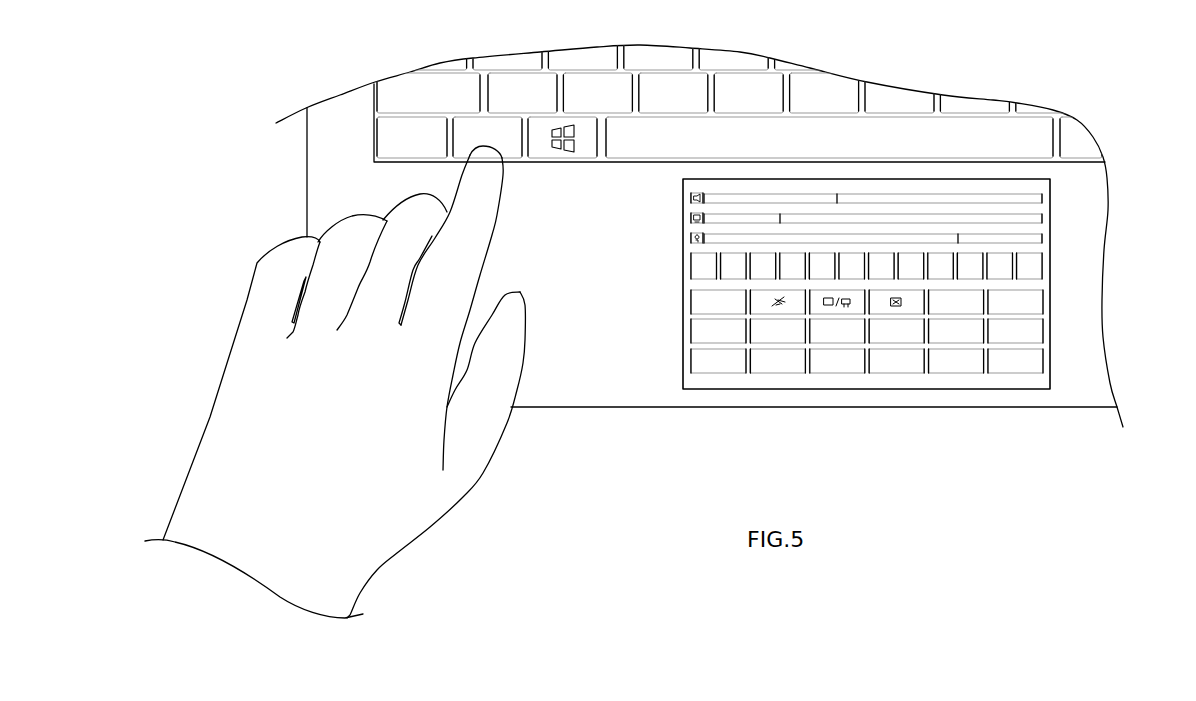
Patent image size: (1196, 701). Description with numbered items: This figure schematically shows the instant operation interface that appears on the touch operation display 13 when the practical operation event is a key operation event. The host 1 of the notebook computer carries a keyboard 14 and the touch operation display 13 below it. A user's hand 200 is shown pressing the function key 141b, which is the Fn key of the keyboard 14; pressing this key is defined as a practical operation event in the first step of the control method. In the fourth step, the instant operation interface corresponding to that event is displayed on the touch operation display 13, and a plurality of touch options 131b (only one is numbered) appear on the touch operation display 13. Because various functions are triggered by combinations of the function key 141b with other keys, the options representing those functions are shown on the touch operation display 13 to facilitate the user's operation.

The host 1 is at (597, 418).
The touch operation display 13 is at (939, 284).
The touch options 131b is at (1033, 303).
The keyboard 14 is at (685, 108).
The function key 141b is at (467, 150).
The user's hand 200 is at (262, 271).